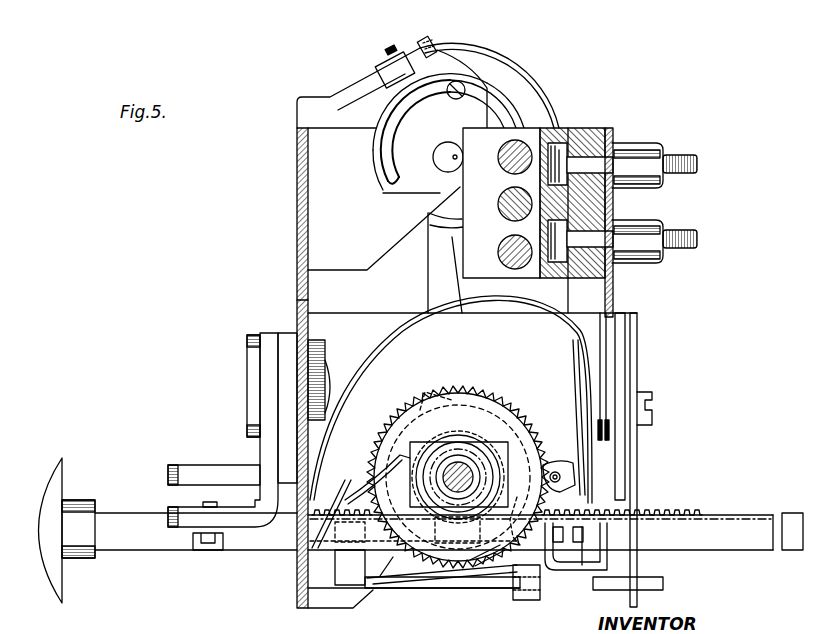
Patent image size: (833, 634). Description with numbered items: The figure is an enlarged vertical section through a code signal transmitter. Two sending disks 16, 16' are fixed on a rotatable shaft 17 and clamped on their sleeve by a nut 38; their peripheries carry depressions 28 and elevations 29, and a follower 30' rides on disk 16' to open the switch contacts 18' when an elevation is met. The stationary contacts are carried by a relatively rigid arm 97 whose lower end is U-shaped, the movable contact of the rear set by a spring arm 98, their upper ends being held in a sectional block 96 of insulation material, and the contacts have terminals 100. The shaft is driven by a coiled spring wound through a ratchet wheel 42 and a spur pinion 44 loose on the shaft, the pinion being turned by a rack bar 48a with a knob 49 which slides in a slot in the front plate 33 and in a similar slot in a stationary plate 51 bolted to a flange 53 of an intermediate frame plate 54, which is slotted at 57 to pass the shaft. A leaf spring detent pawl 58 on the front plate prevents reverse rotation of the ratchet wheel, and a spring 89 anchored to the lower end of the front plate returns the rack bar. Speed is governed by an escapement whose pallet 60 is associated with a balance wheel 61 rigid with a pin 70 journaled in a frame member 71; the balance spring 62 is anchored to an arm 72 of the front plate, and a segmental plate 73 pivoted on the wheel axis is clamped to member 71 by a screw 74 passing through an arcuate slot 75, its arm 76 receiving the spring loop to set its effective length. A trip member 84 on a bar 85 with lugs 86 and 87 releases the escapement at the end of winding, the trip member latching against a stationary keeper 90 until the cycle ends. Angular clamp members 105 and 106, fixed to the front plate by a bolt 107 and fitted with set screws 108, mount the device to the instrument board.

The disk 16 is at (458, 460).
The disk 16' is at (477, 472).
The rotatable shaft 17 is at (459, 477).
The switch contacts 18' is at (576, 575).
The peripheral depressions 28 is at (420, 408).
The elevations 29 is at (537, 442).
The follower 30' is at (566, 459).
The front plate 33 is at (306, 216).
The nut 38 is at (410, 458).
The ratchet wheel 42 is at (490, 398).
The spur pinion 44 is at (445, 446).
The rack bar 48a is at (265, 538).
The knob 49 is at (50, 578).
The stationary plate 51 is at (637, 497).
The flange 53 is at (620, 332).
The intermediate frame member 54 is at (592, 327).
The slot 57 is at (440, 528).
The detent pawl 58 is at (343, 497).
The oscillatory pallet 60 is at (426, 288).
The balance wheel 61 is at (507, 117).
The balance spring 62 is at (507, 63).
The pin 70 is at (454, 155).
The frame member 71 is at (320, 172).
The arm 72 is at (357, 82).
The segmental plate 73 is at (407, 145).
The screw 74 is at (467, 87).
The arcuate slot 75 is at (385, 178).
The arm 76 is at (433, 42).
The trip member 84 is at (498, 578).
The bar 85 is at (442, 580).
The lug 86 is at (353, 570).
The lug 87 is at (617, 583).
The spring 89 is at (380, 350).
The latch keeper 90 is at (533, 582).
The sectional block 96 is at (590, 128).
The arm 97 is at (608, 352).
The spring arm 98 is at (600, 372).
The terminals 100 is at (640, 215).
The angular member 105 is at (226, 440).
The angular member 106 is at (168, 510).
The bolt 107 is at (252, 397).
The set screw 108 is at (202, 545).